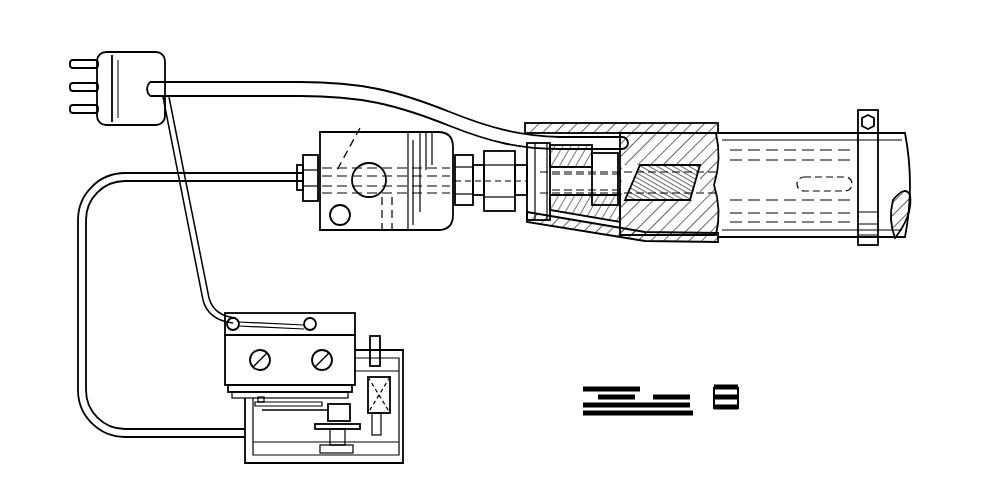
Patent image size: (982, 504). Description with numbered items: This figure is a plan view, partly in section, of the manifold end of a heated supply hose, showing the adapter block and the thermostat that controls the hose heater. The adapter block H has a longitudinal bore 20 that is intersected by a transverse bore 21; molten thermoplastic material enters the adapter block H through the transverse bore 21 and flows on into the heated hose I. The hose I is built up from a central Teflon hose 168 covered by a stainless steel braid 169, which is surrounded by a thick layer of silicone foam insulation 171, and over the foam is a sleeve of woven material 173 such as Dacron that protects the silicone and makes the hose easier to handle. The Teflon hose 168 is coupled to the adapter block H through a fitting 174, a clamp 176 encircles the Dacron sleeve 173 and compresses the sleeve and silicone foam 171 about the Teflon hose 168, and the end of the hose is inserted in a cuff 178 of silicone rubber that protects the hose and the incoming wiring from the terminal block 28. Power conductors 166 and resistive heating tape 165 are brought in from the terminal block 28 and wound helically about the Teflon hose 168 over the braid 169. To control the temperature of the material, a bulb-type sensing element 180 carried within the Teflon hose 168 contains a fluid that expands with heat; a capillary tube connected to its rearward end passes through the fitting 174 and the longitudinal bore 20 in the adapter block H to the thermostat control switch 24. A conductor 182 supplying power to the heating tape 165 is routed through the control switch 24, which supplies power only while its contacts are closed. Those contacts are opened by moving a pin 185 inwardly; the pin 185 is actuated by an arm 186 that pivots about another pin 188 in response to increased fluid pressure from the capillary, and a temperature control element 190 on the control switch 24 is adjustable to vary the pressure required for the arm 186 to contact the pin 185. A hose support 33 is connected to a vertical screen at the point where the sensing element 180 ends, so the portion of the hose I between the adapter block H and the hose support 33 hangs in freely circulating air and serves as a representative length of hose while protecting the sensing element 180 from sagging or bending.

The terminal block 28 is at (152, 62).
The conductor 182 is at (206, 268).
The adapter block H is at (440, 218).
The longitudinal bore 20 is at (364, 128).
The transverse bore 21 is at (389, 223).
The fitting 174 is at (495, 210).
The cuff 178 is at (580, 108).
The clamp 176 is at (534, 222).
The Teflon hose 168 is at (605, 224).
The power conductors 166 is at (642, 228).
The resistive heating tape 165 is at (716, 150).
The stainless steel braid 169 is at (666, 165).
The silicone foam insulation 171 is at (700, 237).
The heated hose I is at (774, 130).
The sleeve of woven material 173 is at (716, 240).
The bulb-type sensing element 180 is at (826, 160).
The hose support 33 is at (866, 248).
The thermostat control switch 24 is at (405, 423).
The temperature control element 190 is at (385, 350).
The pin 185 is at (258, 402).
The arm 186 is at (262, 412).
The pin 188 is at (327, 415).